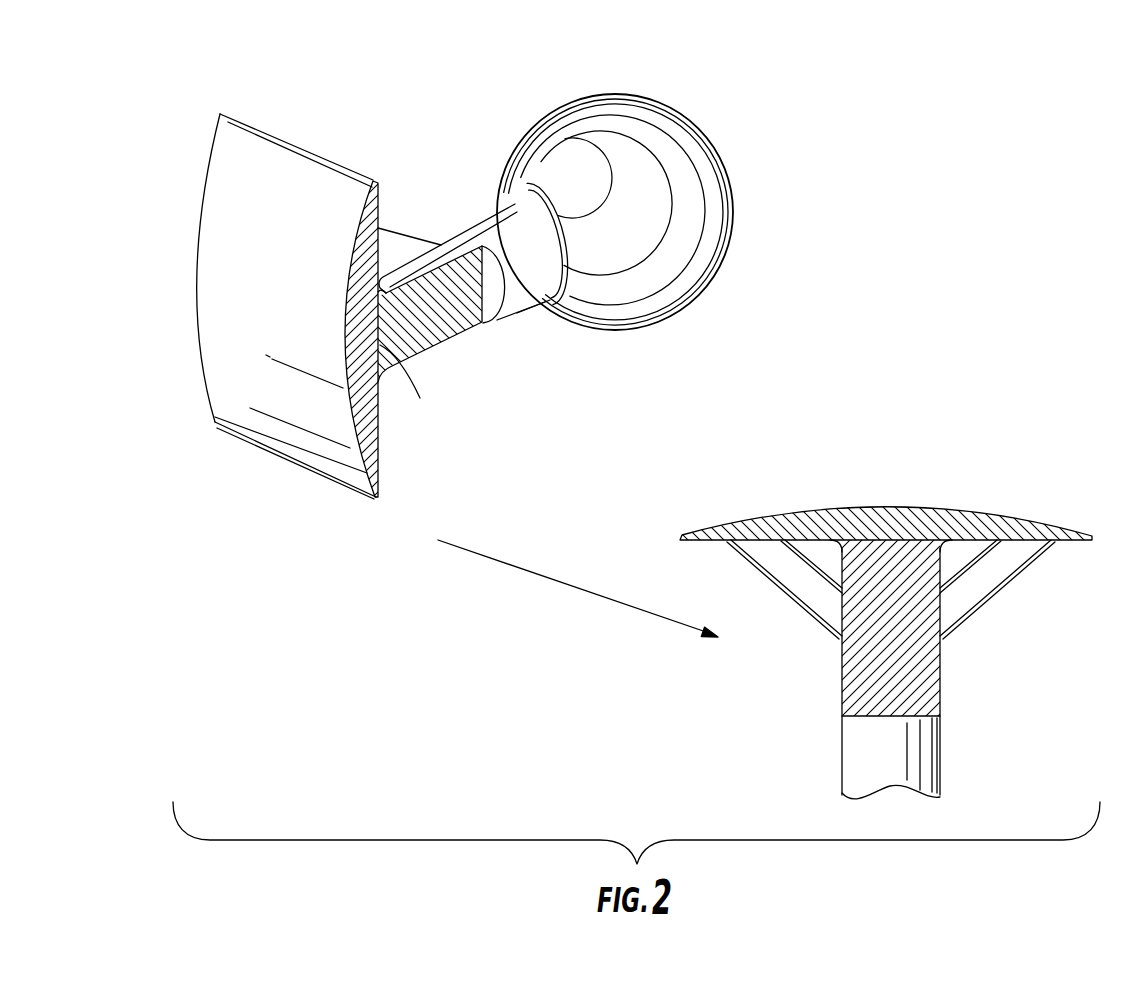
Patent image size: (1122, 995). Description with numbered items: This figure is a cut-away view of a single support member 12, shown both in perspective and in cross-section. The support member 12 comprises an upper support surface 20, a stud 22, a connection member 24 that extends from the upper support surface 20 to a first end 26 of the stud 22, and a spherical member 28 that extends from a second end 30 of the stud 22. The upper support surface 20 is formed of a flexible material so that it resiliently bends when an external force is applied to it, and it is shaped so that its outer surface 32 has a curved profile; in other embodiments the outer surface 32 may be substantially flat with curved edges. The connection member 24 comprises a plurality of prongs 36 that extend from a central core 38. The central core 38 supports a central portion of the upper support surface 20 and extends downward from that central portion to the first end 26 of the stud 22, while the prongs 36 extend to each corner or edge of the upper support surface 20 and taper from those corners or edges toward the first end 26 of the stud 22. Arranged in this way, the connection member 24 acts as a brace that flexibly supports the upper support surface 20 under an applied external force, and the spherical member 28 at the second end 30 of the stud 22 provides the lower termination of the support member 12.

The support member 12 is at (290, 100).
The upper support surface 20 is at (203, 343).
The stud 22 is at (470, 212).
The connection member 24 is at (390, 350).
The first end of the stud 26 is at (427, 335).
The spherical member 28 is at (640, 137).
The second end of the stud 30 is at (520, 220).
The outer surface 32 is at (268, 377).
The prongs 36 is at (397, 237).
The central core 38 is at (392, 330).